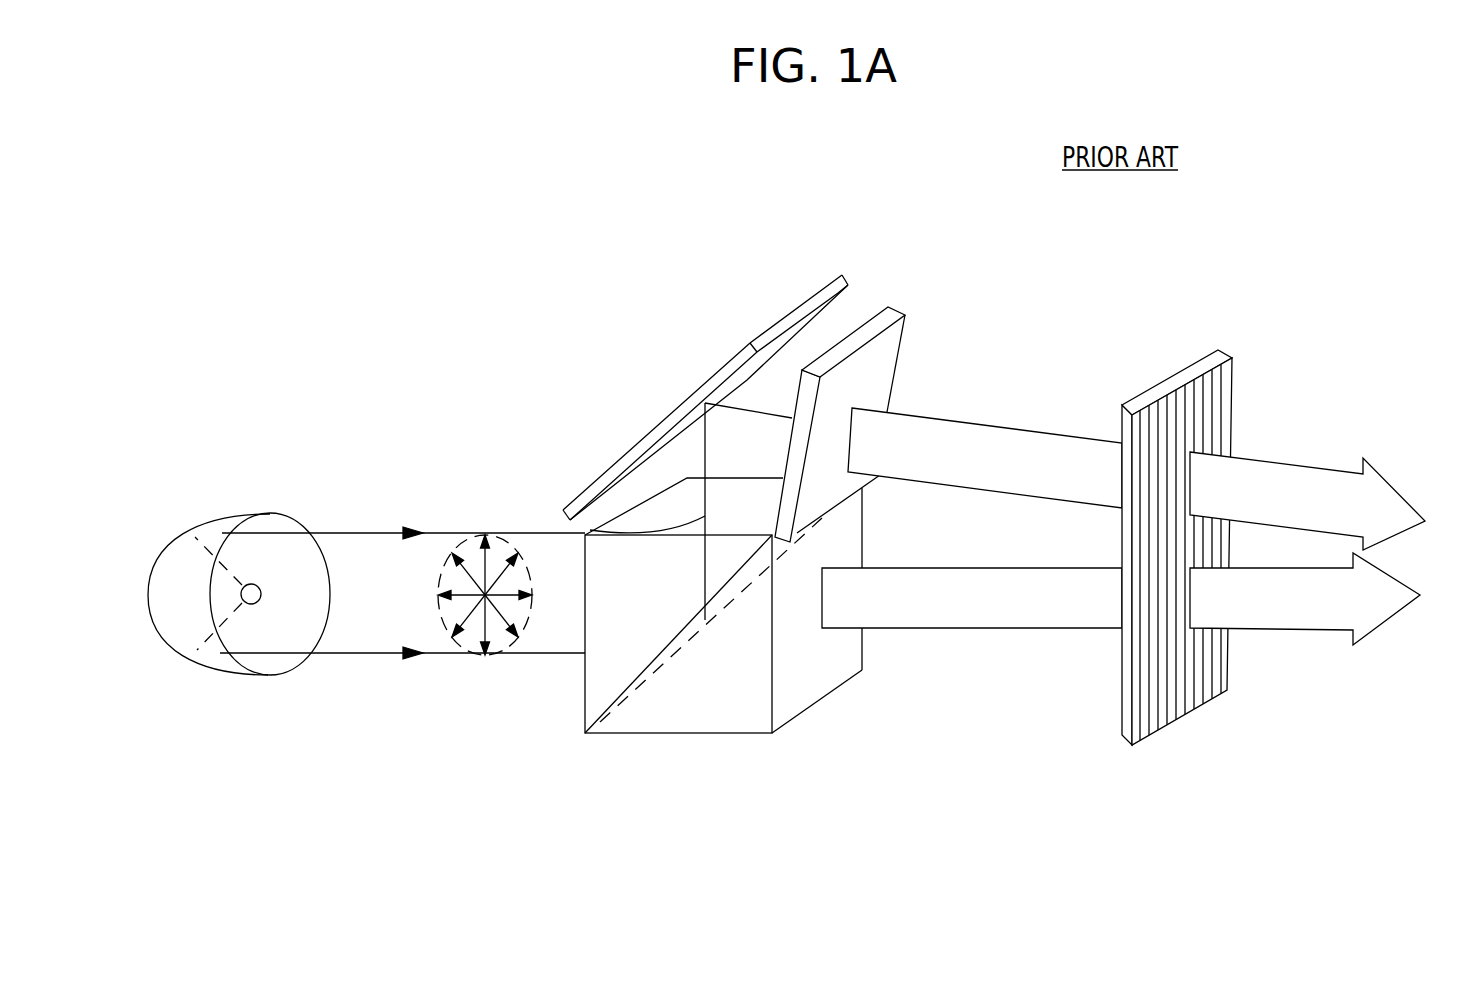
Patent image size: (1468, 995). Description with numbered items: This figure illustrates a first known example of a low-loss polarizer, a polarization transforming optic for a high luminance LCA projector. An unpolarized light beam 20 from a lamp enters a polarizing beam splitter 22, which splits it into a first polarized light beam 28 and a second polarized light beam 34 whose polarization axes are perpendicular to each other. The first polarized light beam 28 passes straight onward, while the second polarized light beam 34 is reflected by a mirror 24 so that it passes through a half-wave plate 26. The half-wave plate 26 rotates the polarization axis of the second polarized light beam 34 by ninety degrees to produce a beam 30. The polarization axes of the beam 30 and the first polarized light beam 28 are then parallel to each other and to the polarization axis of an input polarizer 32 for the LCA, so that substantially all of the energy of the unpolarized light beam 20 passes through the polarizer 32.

The unpolarized light beam 20 is at (428, 654).
The polarizing beam splitter 22 is at (657, 672).
The mirror 24 is at (662, 418).
The half-wave plate 26 is at (907, 333).
The first polarized light beam 28 is at (967, 632).
The beam 30 is at (983, 425).
The polarizer 32 is at (1180, 367).
The second polarized light beam 34 is at (595, 530).